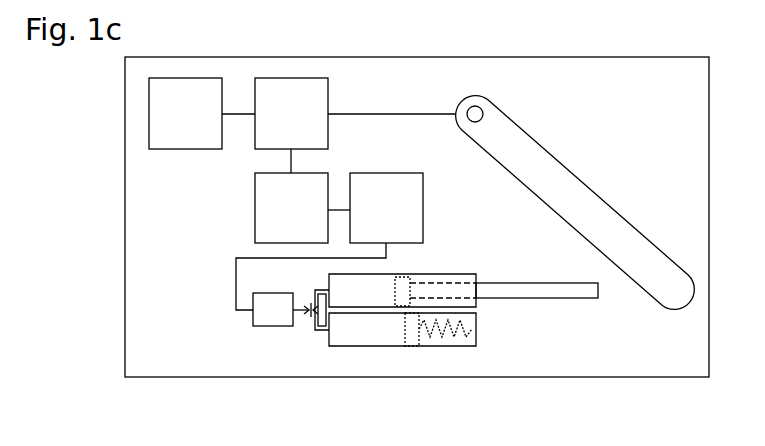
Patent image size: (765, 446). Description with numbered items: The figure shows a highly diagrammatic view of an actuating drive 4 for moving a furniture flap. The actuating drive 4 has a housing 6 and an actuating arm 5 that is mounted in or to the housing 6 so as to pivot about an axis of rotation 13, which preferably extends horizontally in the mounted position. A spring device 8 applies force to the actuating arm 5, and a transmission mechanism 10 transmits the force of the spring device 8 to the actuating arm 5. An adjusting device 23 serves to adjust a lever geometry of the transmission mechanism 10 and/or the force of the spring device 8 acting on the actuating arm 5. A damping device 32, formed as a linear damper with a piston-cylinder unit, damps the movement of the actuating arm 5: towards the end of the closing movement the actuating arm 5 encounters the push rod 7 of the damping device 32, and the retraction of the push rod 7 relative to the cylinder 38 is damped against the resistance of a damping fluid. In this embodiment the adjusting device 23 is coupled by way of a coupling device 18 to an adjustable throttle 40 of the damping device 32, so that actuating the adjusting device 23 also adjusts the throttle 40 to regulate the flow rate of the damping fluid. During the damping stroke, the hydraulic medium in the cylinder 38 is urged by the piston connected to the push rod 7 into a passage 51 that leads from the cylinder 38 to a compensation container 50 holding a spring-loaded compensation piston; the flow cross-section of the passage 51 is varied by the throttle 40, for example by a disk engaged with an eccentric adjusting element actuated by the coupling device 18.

The actuating drive 4 is at (110, 223).
The actuating arm 5 is at (546, 177).
The housing 6 is at (193, 335).
The push rod 7 is at (572, 289).
The spring device 8 is at (185, 113).
The transmission mechanism 10 is at (291, 113).
The axis of rotation 13 is at (472, 107).
The coupling device 18 is at (386, 208).
The adjusting device 23 is at (291, 208).
The damping device 32 is at (437, 278).
The cylinder 38 is at (476, 274).
The adjustable throttle 40 is at (273, 309).
The compensation container 50 is at (477, 330).
The passage 51 is at (315, 329).